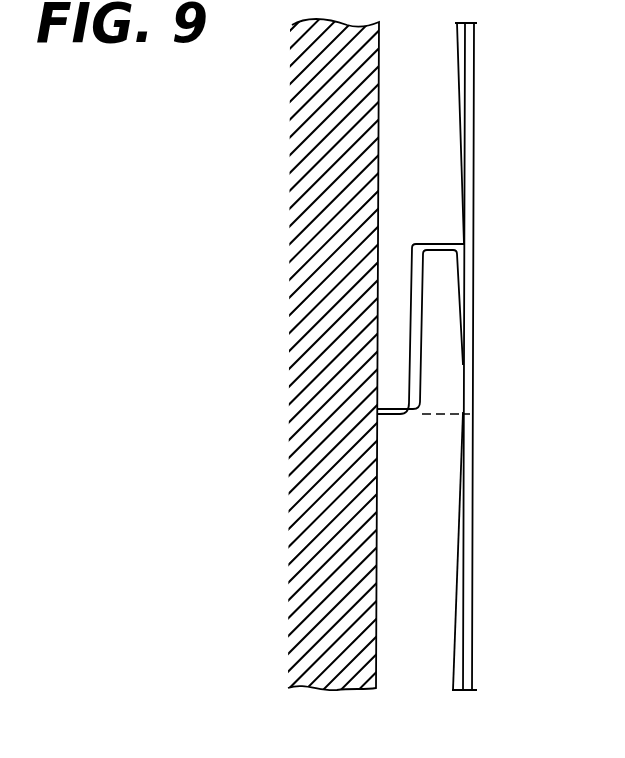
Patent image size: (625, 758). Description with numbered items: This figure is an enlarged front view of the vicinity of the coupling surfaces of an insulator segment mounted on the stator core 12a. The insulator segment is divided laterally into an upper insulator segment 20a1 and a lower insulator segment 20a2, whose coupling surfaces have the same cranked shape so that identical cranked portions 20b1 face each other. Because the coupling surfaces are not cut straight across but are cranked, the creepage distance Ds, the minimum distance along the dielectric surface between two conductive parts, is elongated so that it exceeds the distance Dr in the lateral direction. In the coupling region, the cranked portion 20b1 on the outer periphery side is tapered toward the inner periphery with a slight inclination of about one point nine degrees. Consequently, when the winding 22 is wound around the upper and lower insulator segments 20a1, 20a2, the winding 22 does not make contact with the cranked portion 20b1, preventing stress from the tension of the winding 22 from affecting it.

The stator core 12a is at (358, 313).
The winding 22 is at (470, 542).
The upper insulator segment 20a1 is at (455, 157).
The lower insulator segment 20a2 is at (455, 534).
The cranked portion 20b1 is at (457, 288).
The creepage distance Ds is at (444, 246).
The distance in the lateral direction Dr is at (400, 416).